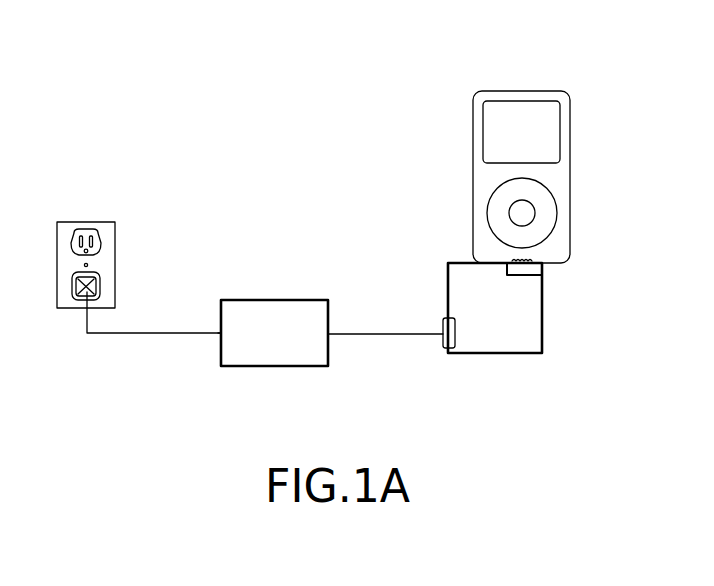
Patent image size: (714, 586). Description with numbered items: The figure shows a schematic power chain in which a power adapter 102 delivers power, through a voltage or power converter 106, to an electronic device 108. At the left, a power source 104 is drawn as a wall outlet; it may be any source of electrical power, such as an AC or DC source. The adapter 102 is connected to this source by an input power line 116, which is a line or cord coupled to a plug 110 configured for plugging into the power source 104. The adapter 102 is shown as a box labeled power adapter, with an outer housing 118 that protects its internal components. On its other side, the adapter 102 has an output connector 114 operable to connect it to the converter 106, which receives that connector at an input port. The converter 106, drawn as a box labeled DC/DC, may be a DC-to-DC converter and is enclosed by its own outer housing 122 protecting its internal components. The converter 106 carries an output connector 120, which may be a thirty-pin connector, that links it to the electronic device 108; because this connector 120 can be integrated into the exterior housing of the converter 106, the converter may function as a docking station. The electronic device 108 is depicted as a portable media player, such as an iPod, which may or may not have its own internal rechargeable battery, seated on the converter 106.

The power adapter 102 is at (250, 299).
The power source 104 is at (115, 224).
The voltage or power converter 106 is at (462, 348).
The electronic device 108 is at (525, 91).
The plug 110 is at (98, 286).
The output connector 114 is at (445, 322).
The input power line 116 is at (153, 333).
The outer housing 118 is at (262, 367).
The output connector 120 is at (527, 271).
The outer housing 122 is at (490, 354).